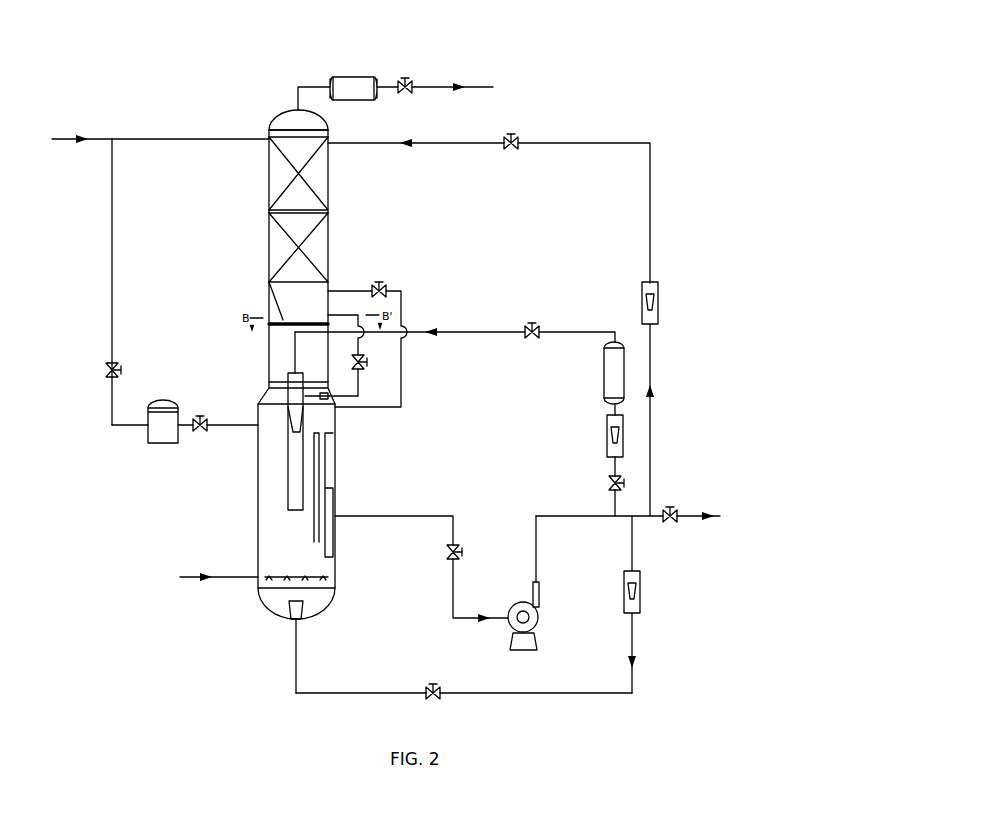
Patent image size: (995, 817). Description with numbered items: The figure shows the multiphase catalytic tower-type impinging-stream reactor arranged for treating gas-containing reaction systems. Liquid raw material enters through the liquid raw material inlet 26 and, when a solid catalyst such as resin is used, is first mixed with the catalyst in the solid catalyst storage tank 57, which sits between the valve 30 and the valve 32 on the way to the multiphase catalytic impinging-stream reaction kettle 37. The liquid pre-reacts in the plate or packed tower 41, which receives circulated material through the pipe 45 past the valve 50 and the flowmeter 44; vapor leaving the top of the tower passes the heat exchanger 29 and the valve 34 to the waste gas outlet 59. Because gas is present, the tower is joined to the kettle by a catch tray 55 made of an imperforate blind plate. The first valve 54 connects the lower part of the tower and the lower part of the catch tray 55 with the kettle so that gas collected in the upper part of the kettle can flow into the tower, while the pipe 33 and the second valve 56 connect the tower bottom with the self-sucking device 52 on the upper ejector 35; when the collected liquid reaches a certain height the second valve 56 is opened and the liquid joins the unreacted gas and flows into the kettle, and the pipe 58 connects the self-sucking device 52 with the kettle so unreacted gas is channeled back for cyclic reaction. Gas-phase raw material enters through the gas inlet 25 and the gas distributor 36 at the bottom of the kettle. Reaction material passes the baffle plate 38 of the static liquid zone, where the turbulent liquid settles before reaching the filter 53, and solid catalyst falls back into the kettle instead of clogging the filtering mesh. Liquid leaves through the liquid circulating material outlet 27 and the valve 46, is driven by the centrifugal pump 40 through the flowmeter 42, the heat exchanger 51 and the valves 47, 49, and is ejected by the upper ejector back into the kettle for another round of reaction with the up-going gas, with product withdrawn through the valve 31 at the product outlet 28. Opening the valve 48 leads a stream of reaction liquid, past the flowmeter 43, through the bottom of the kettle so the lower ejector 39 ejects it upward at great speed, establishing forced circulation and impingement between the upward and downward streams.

The gas inlet 25 is at (178, 592).
The liquid raw material inlet 26 is at (103, 139).
The liquid circulating material outlet 27 is at (375, 516).
The product outlet 28 is at (688, 552).
The heat exchanger 29 is at (337, 78).
The valve 30 is at (107, 373).
The valve 31 is at (668, 508).
The valve 32 is at (198, 415).
The pipe connecting the catch tray and the self-sucking device 33 is at (344, 392).
The valve 34 is at (406, 79).
The draft tube 35 is at (288, 512).
The gas distributor 36 is at (265, 577).
The multiphase catalytic impinging-stream reaction kettle 37 is at (256, 486).
The baffle plate of the static liquid zone 38 is at (310, 537).
The lower ejector 39 is at (289, 618).
The centrifugal pump 40 is at (513, 633).
The packed column 41 is at (328, 170).
The flowmeter 42 is at (606, 445).
The flowmeter 43 is at (623, 592).
The flowmeter 44 is at (658, 302).
The pipe leading the material into the plate or packed tower 45 is at (443, 143).
The valve 46 is at (449, 553).
The valve 47 is at (612, 486).
The valve 48 is at (433, 688).
The valve 49 is at (536, 325).
The valve 50 is at (513, 150).
The heat exchanger 51 is at (604, 356).
The self-sucking device 52 is at (277, 394).
The filter 53 is at (327, 497).
The first valve 54 is at (379, 283).
The catch tray 55 is at (271, 283).
The second valve 56 is at (364, 370).
The solid catalyst storage tank 57 is at (148, 440).
The pipe connecting the self-sucking device and the multiphase catalytic impinging-s 58 is at (328, 399).
The waste gas outlet 59 is at (470, 87).